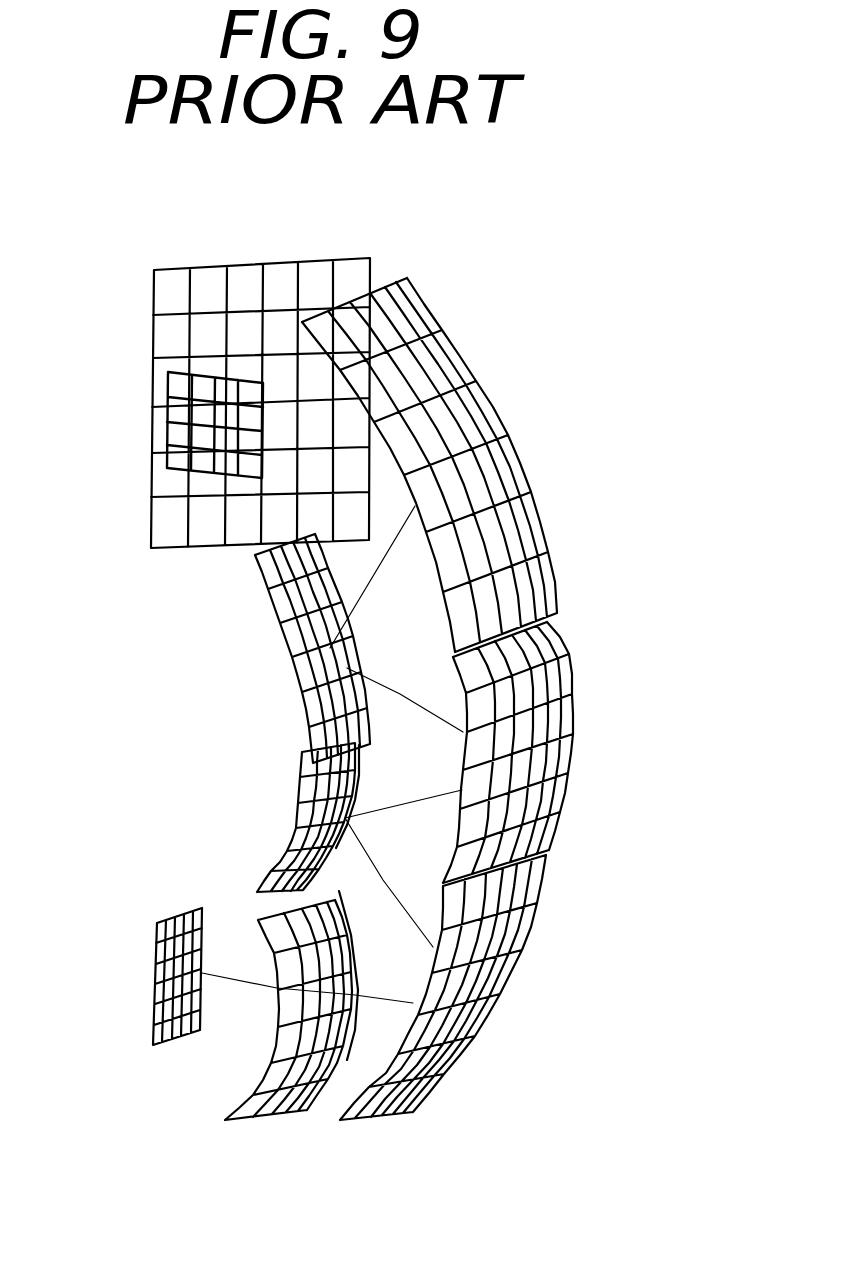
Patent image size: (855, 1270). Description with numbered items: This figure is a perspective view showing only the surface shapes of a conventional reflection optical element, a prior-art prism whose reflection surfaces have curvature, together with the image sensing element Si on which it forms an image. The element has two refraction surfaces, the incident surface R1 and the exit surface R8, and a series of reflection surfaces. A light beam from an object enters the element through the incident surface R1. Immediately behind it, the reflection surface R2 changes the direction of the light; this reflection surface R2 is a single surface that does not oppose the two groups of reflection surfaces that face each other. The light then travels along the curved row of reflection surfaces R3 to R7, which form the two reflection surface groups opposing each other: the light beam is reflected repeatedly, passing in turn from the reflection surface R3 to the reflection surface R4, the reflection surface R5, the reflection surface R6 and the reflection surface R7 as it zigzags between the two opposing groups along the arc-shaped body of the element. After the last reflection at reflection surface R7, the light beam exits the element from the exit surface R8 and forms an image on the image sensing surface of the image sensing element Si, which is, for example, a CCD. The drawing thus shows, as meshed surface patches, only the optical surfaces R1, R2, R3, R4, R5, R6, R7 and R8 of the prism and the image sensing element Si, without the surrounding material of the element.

The refraction surface (incident surface) R1 is at (213, 431).
The reflection surface R2 is at (245, 275).
The reflection surface R3 is at (490, 387).
The reflection surface R4 is at (287, 645).
The reflection surface R5 is at (573, 677).
The reflection surface R6 is at (297, 815).
The reflection surface R7 is at (533, 925).
The refraction surface (exit surface) R8 is at (240, 1102).
The image sensing element Si is at (153, 952).